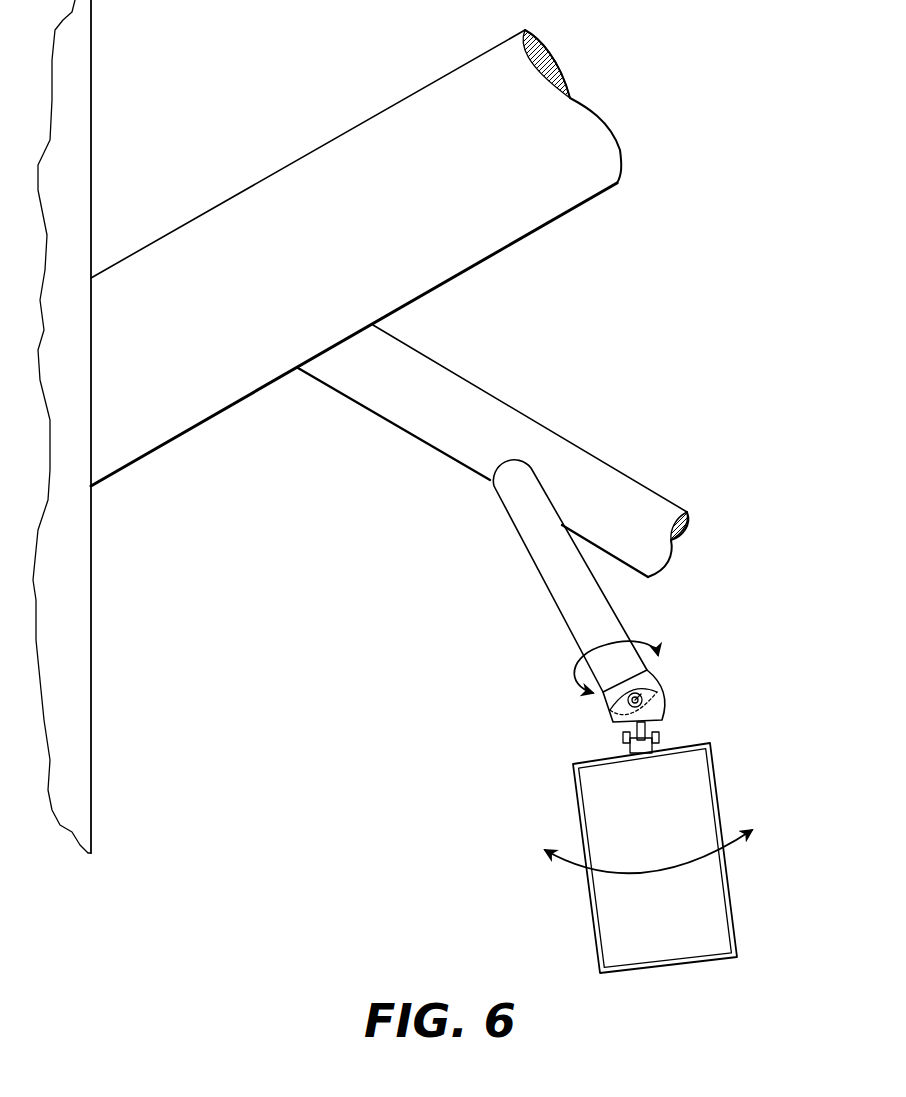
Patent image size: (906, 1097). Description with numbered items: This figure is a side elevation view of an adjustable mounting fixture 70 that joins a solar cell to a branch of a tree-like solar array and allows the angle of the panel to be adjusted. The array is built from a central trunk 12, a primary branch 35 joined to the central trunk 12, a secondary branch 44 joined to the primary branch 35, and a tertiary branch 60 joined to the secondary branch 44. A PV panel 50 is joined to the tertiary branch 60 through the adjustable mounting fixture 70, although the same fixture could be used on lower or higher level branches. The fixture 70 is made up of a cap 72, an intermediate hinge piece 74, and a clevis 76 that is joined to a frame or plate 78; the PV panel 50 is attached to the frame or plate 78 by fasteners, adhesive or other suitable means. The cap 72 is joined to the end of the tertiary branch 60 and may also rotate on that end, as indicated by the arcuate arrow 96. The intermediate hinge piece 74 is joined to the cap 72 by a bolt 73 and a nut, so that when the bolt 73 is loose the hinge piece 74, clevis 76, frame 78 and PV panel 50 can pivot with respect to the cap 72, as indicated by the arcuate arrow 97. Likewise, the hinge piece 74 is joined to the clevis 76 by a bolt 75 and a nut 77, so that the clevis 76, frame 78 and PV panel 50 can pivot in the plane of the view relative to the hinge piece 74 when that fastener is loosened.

The central trunk 12 is at (94, 593).
The primary branch 35 is at (308, 150).
The secondary branch 44 is at (498, 397).
The tertiary branch 60 is at (533, 558).
The adjustable mounting fixture 70 is at (618, 686).
The cap 72 is at (657, 678).
The bolt 73 is at (613, 715).
The intermediate hinge piece 74 is at (660, 700).
The bolt 75 is at (623, 735).
The clevis 76 is at (657, 735).
The nut 77 is at (657, 727).
The frame or plate 78 is at (733, 900).
The PV panel 50 is at (661, 858).
The arcuate arrow 96 is at (605, 650).
The arcuate arrow 97 is at (653, 873).